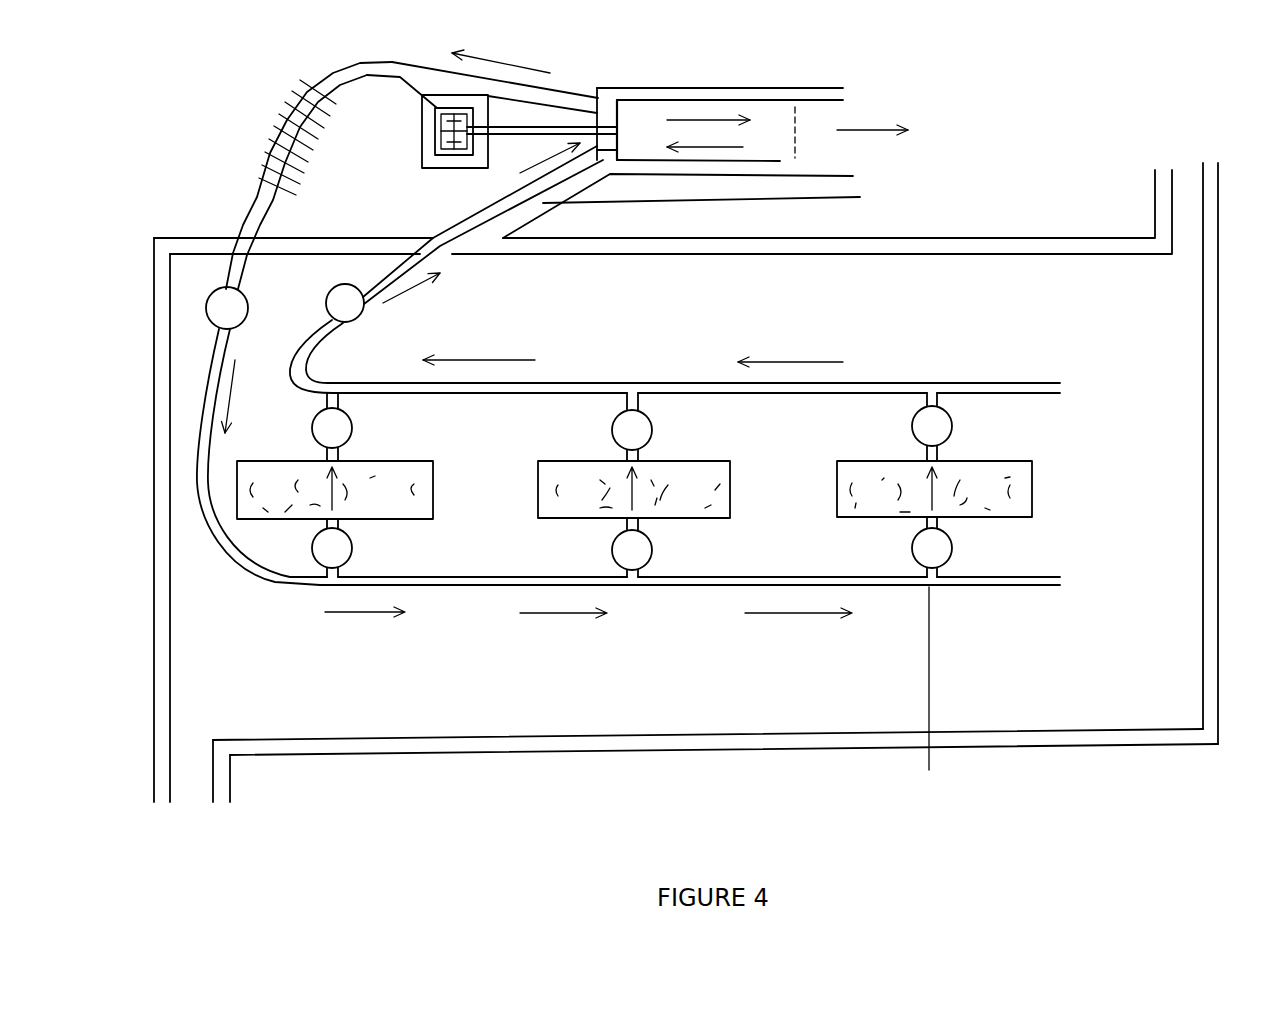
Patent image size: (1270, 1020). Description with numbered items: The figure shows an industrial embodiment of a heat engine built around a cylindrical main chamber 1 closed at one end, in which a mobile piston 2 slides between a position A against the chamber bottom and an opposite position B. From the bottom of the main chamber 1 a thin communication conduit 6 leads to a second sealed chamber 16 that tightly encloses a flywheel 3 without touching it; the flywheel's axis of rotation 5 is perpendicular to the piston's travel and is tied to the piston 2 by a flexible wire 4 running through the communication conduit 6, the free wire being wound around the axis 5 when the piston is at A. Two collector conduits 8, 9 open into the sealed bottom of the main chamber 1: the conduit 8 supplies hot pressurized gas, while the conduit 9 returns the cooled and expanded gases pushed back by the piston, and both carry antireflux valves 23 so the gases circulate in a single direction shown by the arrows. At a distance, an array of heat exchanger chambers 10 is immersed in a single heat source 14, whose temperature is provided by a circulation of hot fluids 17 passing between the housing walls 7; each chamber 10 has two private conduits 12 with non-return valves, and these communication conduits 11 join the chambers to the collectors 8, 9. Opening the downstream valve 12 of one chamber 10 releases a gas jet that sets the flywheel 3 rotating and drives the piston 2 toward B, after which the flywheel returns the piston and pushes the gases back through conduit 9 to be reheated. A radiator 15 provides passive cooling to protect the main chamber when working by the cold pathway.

The main chamber 1 is at (780, 161).
The mobile piston 2 is at (800, 103).
The flywheel 3 is at (393, 70).
The flexible wire 4 is at (617, 108).
The axis of rotation 5 is at (492, 96).
The communication conduit 6 is at (478, 126).
The partition walls 7 is at (657, 252).
The supply conduit 8 is at (440, 248).
The return conduit 9 is at (330, 83).
The heat exchanger chamber 10 is at (634, 490).
The branch pipes 11 is at (322, 577).
The private conduit 12 is at (934, 433).
The single heat source 14 is at (588, 639).
The radiator 15 is at (257, 110).
The sealed chamber 16 is at (432, 150).
The circulation of hot fluids 17 is at (1168, 300).
The antireflux valve 23 is at (285, 306).